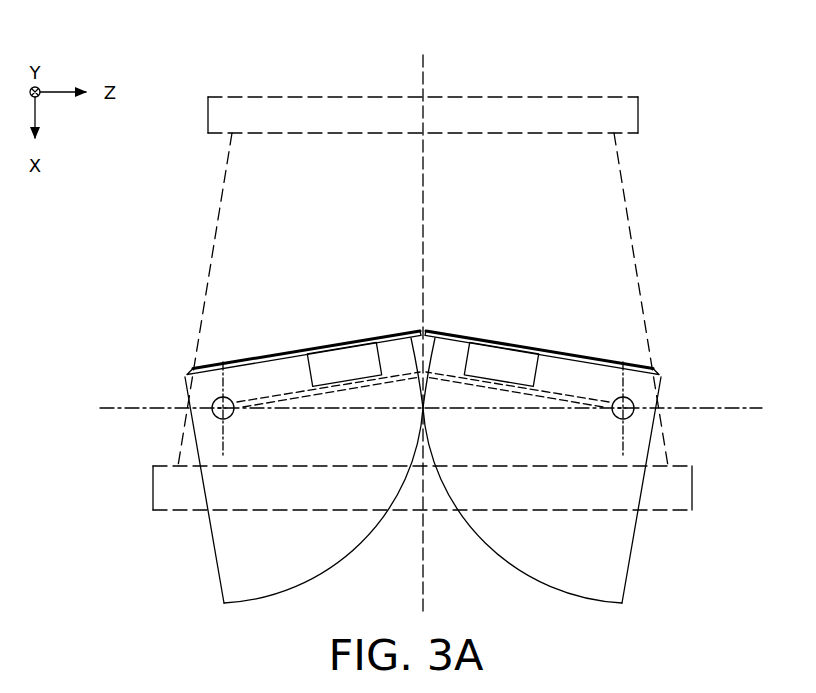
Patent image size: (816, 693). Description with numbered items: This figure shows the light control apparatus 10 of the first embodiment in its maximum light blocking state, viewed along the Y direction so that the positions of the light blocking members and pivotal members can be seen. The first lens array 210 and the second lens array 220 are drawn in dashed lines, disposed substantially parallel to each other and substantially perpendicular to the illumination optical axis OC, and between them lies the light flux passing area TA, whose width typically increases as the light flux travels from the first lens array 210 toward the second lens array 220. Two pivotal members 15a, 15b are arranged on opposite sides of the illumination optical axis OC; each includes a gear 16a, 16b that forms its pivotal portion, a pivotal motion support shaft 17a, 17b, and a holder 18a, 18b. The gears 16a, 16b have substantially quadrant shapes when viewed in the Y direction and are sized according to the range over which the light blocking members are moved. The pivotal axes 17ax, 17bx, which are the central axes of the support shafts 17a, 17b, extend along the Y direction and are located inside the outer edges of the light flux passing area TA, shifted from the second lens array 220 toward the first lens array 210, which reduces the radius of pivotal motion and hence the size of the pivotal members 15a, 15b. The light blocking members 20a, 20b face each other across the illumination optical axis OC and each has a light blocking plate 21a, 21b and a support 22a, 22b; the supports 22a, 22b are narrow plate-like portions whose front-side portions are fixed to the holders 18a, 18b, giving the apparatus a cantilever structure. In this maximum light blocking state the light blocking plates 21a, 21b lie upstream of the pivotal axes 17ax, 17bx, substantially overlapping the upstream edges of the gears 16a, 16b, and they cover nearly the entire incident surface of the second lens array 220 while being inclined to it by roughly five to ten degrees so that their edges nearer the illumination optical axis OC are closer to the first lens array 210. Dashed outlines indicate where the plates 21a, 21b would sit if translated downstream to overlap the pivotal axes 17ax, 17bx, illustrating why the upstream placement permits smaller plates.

The light control apparatus 10 is at (687, 64).
The illumination optical axis OC is at (424, 89).
The first lens array 210 is at (640, 118).
The second lens array 220 is at (683, 490).
The light flux passing area TA is at (612, 212).
The pivotal member 15a is at (580, 428).
The pivotal member 15b is at (267, 431).
The gear 16a is at (504, 553).
The gear 16b is at (342, 553).
The pivotal motion support shaft 17a is at (613, 398).
The pivotal motion support shaft 17b is at (233, 398).
The pivotal axis 17ax is at (615, 416).
The pivotal axis 17bx is at (231, 416).
The holder 18a is at (503, 389).
The holder 18b is at (343, 389).
The light blocking member 20a is at (576, 313).
The light blocking member 20b is at (304, 315).
The light blocking plate 21a is at (551, 350).
The light blocking plate 21b is at (295, 350).
The support 22a is at (509, 352).
The support 22b is at (337, 352).